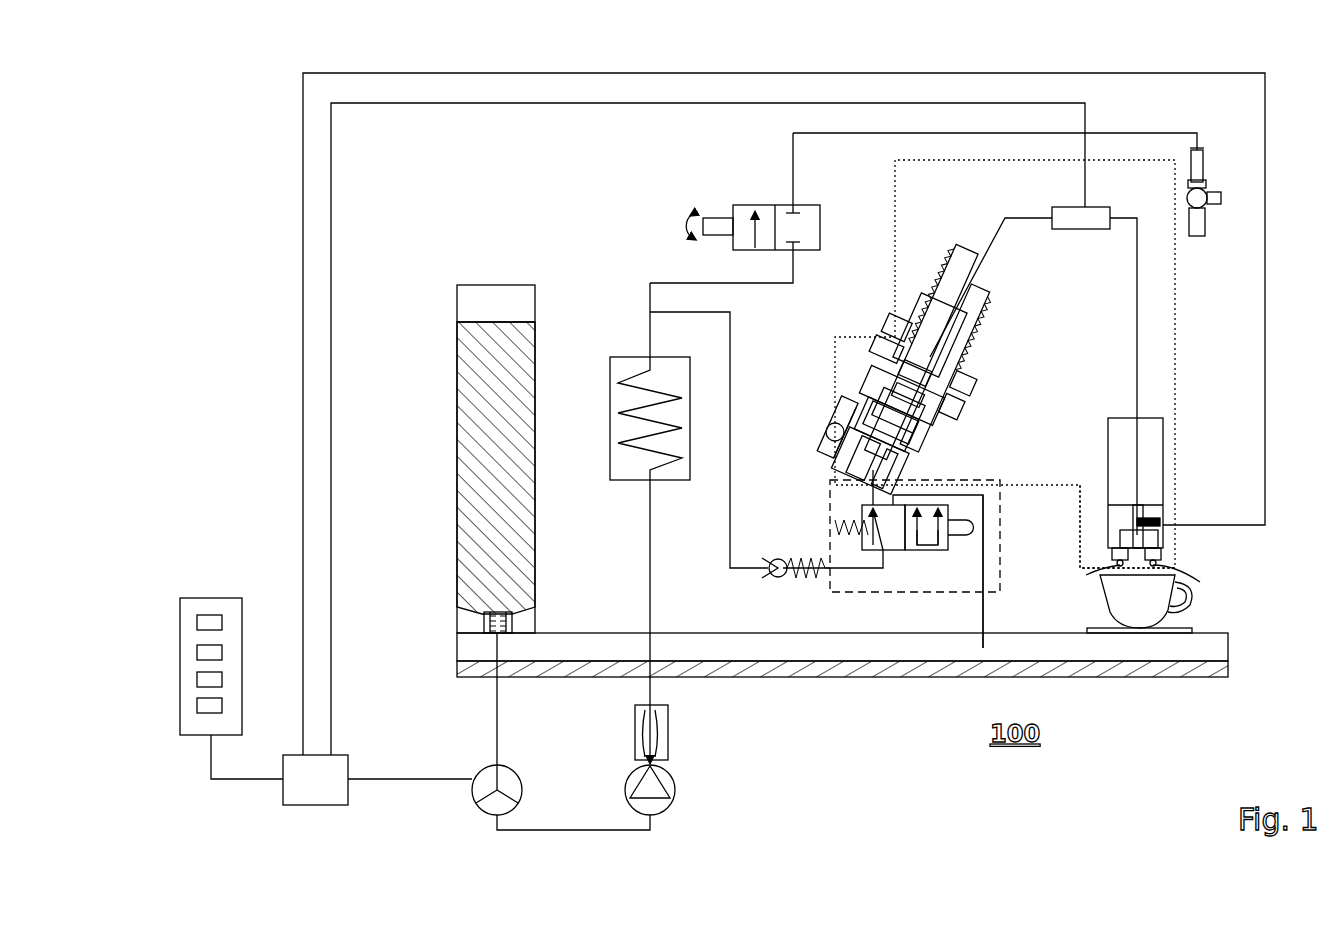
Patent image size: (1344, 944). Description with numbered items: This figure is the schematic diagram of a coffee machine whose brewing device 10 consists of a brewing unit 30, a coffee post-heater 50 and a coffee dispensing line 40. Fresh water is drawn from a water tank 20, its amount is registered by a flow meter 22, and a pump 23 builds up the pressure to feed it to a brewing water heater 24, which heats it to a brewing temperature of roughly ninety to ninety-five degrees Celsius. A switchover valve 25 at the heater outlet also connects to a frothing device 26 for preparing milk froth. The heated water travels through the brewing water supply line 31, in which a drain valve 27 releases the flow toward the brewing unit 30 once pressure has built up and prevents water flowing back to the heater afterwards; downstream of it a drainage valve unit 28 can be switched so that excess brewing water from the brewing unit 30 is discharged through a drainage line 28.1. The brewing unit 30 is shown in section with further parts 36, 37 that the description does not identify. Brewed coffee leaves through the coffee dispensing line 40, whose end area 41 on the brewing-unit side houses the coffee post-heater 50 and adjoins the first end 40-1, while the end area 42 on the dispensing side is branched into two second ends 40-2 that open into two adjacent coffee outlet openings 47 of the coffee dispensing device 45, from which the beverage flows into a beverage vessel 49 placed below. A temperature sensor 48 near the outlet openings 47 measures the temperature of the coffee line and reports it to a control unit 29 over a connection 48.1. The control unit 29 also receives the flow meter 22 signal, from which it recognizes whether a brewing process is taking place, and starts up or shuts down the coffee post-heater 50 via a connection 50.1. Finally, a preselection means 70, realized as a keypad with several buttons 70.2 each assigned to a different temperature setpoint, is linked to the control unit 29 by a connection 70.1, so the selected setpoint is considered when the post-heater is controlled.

The brewing device 10 is at (1028, 485).
The water tank 20 is at (457, 545).
The flow meter 22 is at (472, 795).
The pump 23 is at (665, 780).
The brewing water heater 24 is at (610, 470).
The switchover valve 25 is at (820, 228).
The frothing device 26 is at (1203, 224).
The drain valve 27 is at (770, 578).
The drainage valve unit 28 is at (832, 590).
The drainage line 28.1 is at (983, 600).
The control unit 29 is at (300, 800).
The brewing unit 30 is at (943, 250).
The brewing water supply line 31 is at (873, 505).
The brewing chamber part 36 is at (900, 416).
The brewing chamber part 37 is at (905, 398).
The coffee dispensing line 40 is at (1137, 288).
The first end 40-1 is at (925, 395).
The second ends 40-2 is at (1112, 558).
The end area on the side of the brewing unit 41 is at (928, 373).
The end area on the dispensing side 42 is at (1162, 555).
The coffee dispensing device 45 is at (1155, 468).
The coffee outlet openings 47 is at (1151, 582).
The temperature sensor 48 is at (1160, 522).
The connection 48.1 is at (1265, 445).
The beverage vessel 49 is at (1139, 604).
The coffee post-heater 50 is at (1068, 232).
The connection 50.1 is at (645, 110).
The preselection means 70 is at (212, 598).
The connection 70.1 is at (222, 779).
The buttons 70.2 is at (210, 623).